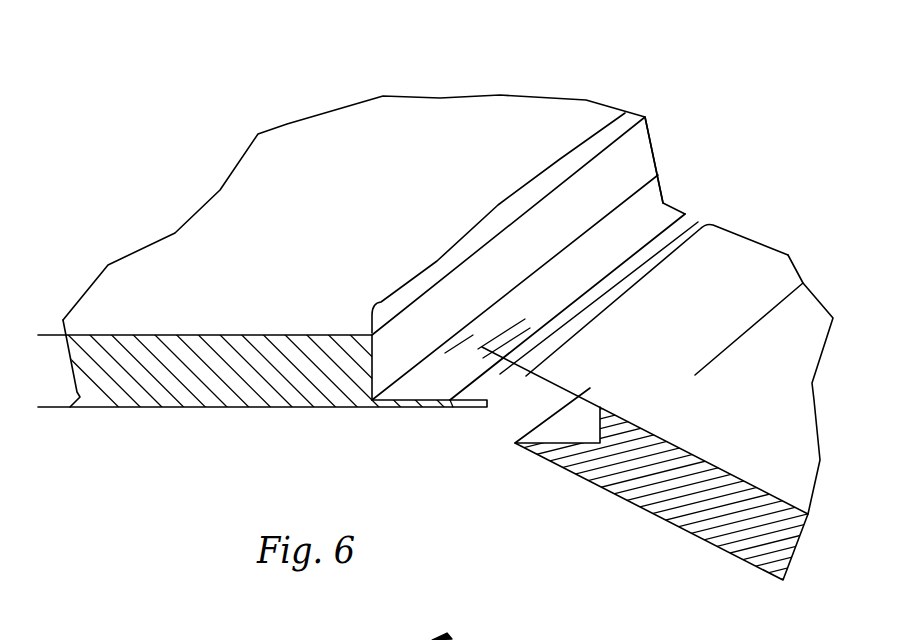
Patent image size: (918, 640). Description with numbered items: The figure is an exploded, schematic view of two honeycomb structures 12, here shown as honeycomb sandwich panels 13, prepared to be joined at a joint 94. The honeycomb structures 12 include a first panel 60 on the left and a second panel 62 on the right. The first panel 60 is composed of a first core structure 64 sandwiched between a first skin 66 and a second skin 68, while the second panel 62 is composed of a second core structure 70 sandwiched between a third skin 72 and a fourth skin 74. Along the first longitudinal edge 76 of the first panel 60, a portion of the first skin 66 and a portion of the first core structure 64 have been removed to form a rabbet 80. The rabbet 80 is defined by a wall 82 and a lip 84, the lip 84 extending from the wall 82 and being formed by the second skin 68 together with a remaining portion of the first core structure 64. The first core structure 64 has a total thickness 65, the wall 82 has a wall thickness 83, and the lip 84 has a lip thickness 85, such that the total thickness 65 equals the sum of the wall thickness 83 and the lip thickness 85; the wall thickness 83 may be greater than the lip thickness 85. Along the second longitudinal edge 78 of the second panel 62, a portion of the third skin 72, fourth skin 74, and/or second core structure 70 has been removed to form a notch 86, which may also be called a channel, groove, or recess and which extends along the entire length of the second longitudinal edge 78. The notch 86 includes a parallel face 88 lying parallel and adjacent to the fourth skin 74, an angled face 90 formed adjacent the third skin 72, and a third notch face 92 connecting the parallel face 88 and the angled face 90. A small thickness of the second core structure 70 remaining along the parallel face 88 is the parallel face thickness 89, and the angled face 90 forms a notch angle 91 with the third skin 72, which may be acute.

The honeycomb structure 12 is at (757, 168).
The honeycomb sandwich panel 13 is at (283, 118).
The first panel 60 is at (433, 86).
The second panel 62 is at (803, 231).
The first core structure 64 is at (187, 370).
The total thickness 65 is at (47, 337).
The first skin 66 is at (283, 178).
The second skin 68 is at (290, 407).
The second core structure 70 is at (518, 415).
The third skin 72 is at (677, 530).
The fourth skin 74 is at (793, 342).
The first longitudinal edge 76 is at (497, 203).
The second longitudinal edge 78 is at (707, 378).
The rabbet 80 is at (420, 382).
The wall 82 is at (613, 176).
The wall thickness 83 is at (343, 398).
The lip 84 is at (445, 378).
The lip thickness 85 is at (480, 380).
The notch 86 is at (565, 418).
The parallel face 88 is at (528, 374).
The parallel face thickness 89 is at (485, 374).
The angled face 90 is at (525, 445).
The notch angle 91 is at (555, 445).
The third notch face 92 is at (600, 425).
The joint 94 is at (737, 215).